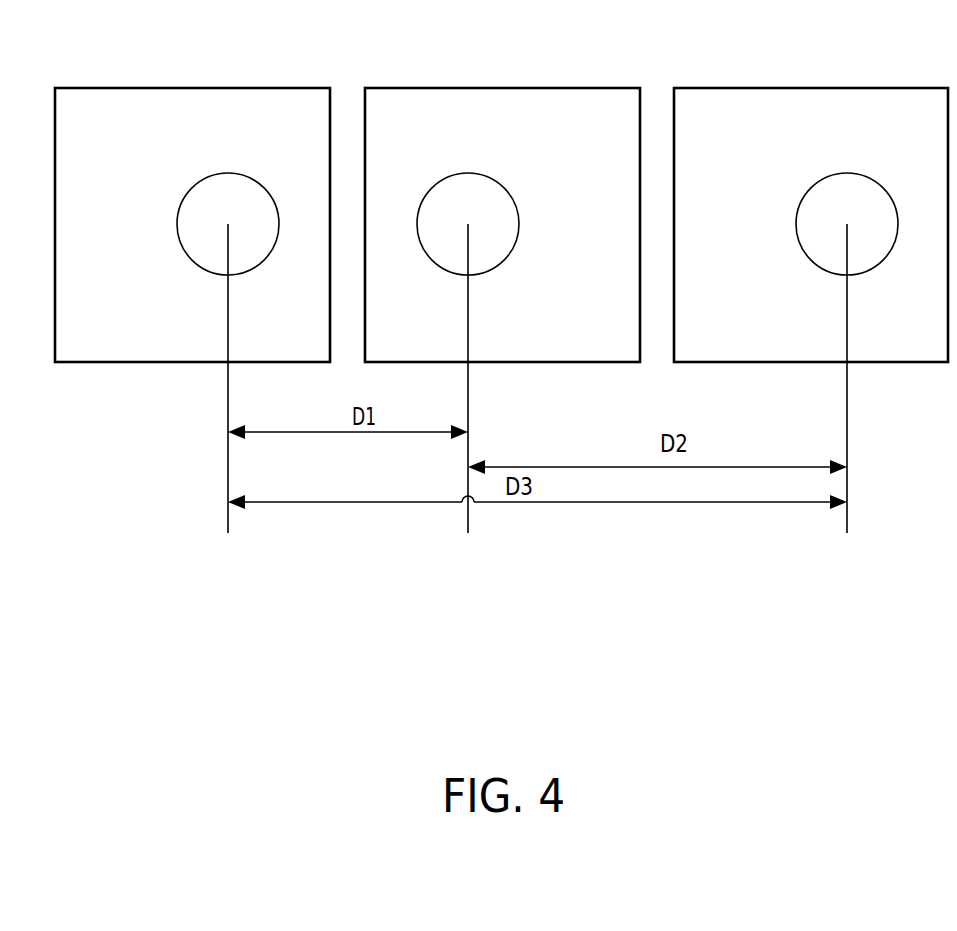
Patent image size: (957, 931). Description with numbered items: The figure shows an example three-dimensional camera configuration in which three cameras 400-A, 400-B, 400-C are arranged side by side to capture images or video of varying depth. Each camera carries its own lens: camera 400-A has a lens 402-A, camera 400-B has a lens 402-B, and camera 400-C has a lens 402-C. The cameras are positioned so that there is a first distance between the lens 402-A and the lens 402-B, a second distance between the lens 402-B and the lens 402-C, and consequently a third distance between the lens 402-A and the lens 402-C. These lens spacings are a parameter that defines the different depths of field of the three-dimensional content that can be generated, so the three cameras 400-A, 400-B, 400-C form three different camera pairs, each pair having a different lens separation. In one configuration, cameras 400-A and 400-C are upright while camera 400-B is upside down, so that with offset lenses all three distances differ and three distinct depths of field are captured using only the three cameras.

The camera 400-A is at (192, 88).
The camera 400-B is at (502, 88).
The camera 400-C is at (810, 88).
The lens 402-A is at (195, 208).
The lens 402-B is at (519, 205).
The lens 402-C is at (797, 210).